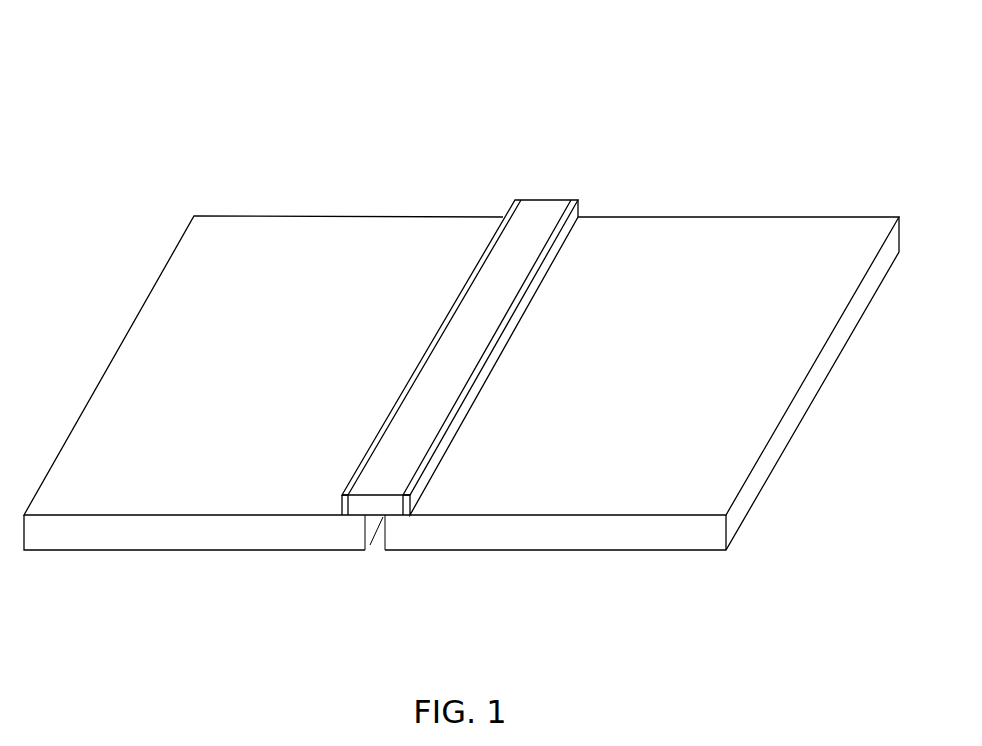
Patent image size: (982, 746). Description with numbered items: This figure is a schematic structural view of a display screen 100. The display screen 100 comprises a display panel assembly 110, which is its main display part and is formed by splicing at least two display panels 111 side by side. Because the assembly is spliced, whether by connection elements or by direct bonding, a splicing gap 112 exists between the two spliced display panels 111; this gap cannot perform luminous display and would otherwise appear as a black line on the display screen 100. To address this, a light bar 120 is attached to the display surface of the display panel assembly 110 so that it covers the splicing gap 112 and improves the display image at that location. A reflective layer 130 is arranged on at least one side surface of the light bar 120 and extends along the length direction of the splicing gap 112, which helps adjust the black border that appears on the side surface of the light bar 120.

The display screen 100 is at (457, 108).
The display panel assembly 110 is at (429, 367).
The display panel 111 is at (595, 152).
The splicing gap 112 is at (366, 545).
The light bar 120 is at (382, 490).
The reflective layer 130 is at (345, 495).